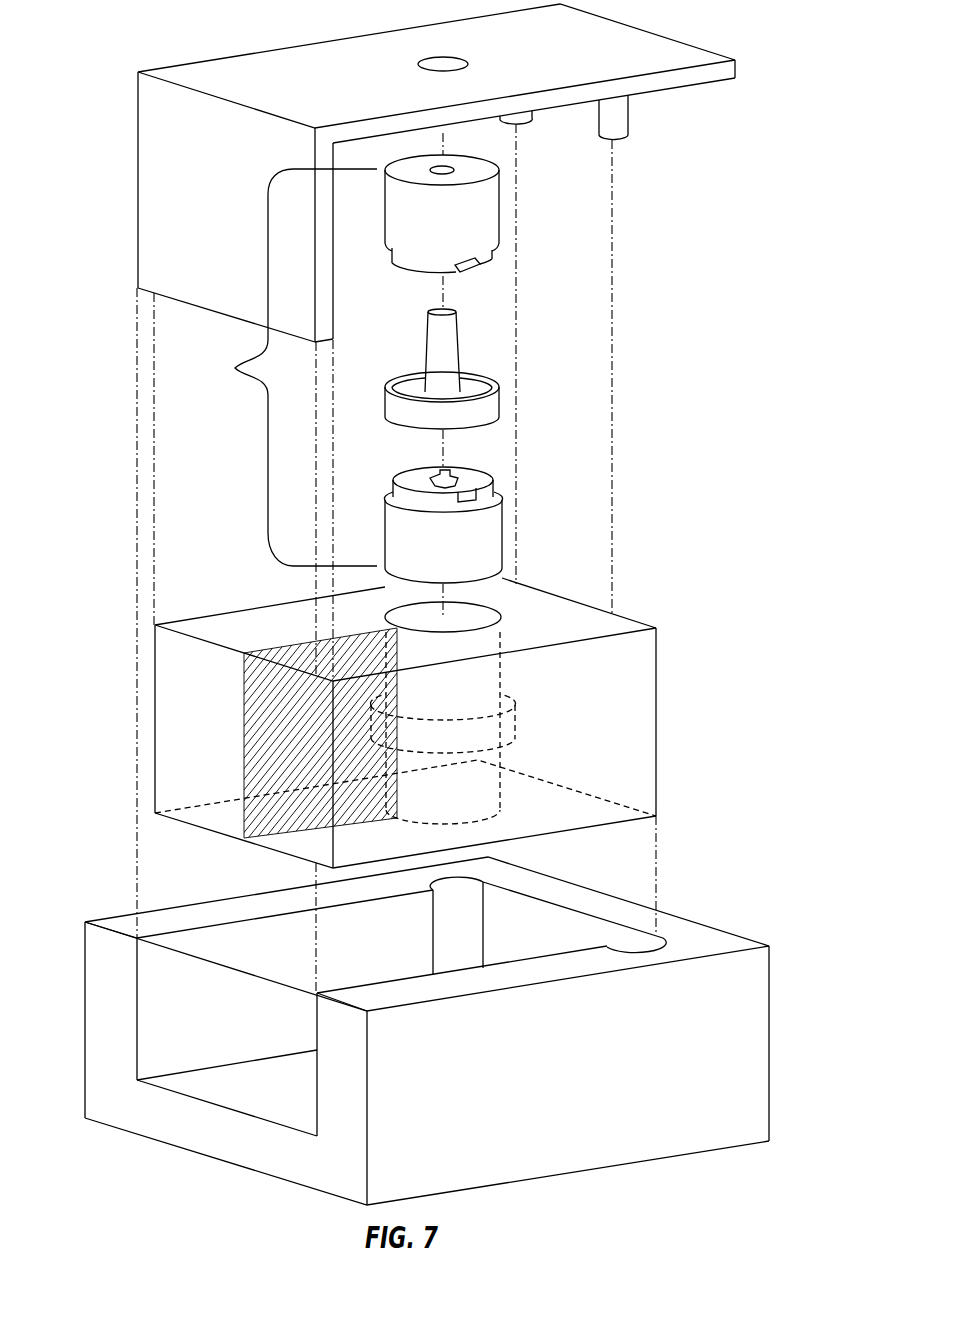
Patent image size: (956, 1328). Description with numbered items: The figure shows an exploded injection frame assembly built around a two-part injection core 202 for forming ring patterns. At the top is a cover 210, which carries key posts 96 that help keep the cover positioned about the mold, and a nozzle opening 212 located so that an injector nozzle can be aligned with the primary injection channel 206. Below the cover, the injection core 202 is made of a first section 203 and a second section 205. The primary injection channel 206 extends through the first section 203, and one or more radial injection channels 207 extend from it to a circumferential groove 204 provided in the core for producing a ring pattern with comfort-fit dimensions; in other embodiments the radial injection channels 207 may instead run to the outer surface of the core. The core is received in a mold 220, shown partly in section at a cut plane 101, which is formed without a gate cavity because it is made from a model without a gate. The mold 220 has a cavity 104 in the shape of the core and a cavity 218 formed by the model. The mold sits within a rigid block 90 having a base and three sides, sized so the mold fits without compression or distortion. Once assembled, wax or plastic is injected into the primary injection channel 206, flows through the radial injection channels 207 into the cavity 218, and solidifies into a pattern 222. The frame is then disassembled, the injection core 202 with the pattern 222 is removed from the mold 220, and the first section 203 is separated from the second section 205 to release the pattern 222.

The block 90 is at (770, 1020).
The key posts 96 is at (522, 124).
The cut plane 101 is at (276, 648).
The cavity 104 is at (493, 619).
The two-part injection core 202 is at (281, 367).
The first section 203 is at (463, 229).
The circumferential groove 204 is at (493, 255).
The second section 205 is at (463, 559).
The primary injection channel 206 is at (443, 168).
The radial injection channels 207 is at (462, 272).
The cover 210 is at (735, 72).
The nozzle opening 212 is at (468, 64).
The cavity 218 is at (520, 718).
The mold 220 is at (656, 721).
The pattern 222 is at (500, 400).